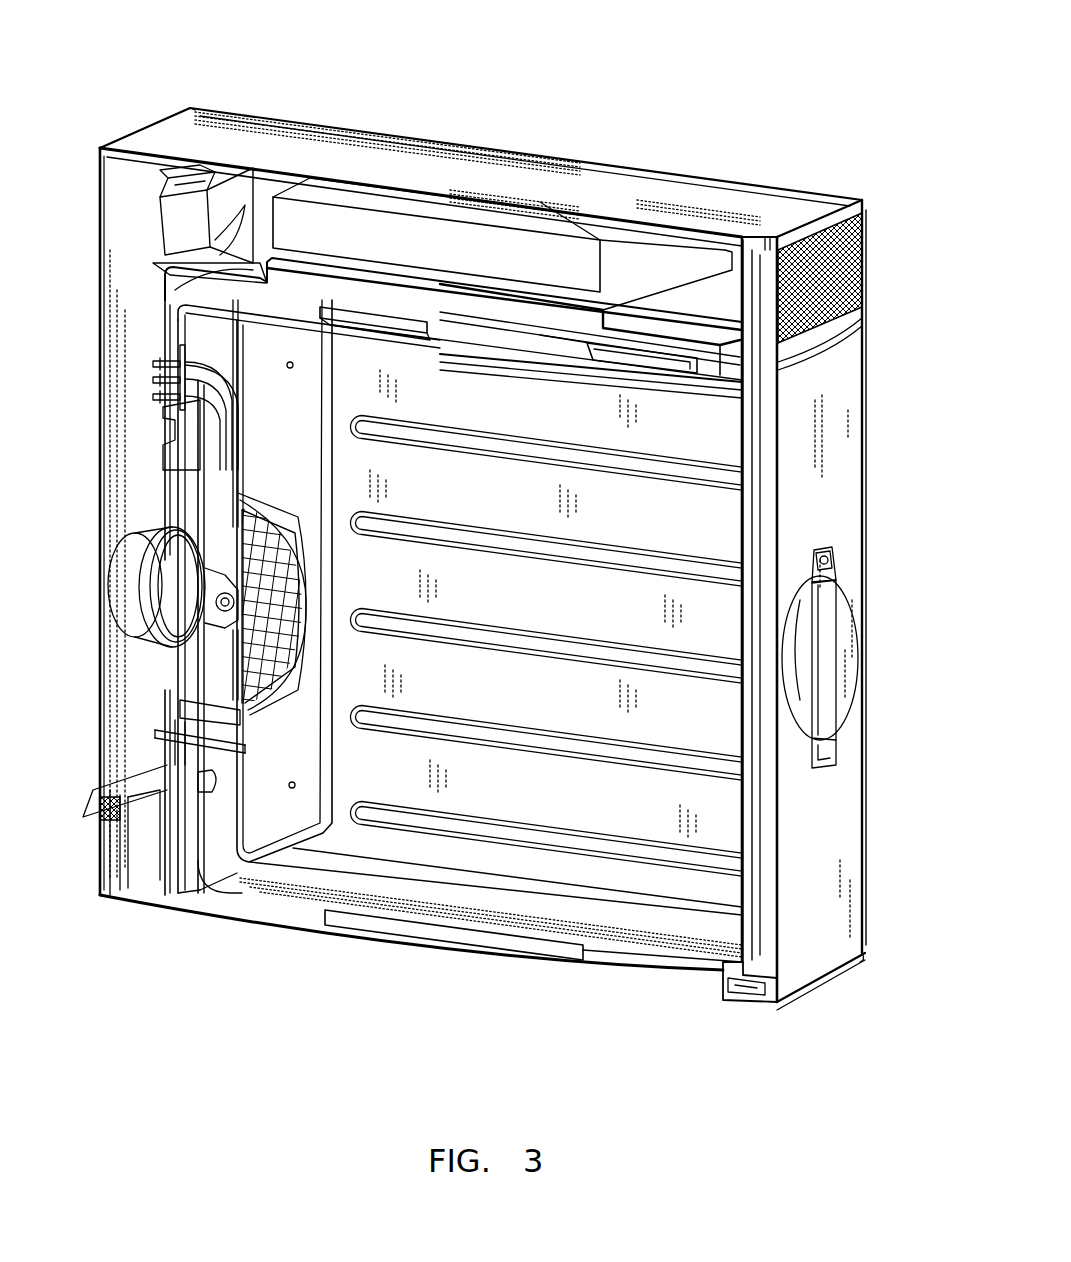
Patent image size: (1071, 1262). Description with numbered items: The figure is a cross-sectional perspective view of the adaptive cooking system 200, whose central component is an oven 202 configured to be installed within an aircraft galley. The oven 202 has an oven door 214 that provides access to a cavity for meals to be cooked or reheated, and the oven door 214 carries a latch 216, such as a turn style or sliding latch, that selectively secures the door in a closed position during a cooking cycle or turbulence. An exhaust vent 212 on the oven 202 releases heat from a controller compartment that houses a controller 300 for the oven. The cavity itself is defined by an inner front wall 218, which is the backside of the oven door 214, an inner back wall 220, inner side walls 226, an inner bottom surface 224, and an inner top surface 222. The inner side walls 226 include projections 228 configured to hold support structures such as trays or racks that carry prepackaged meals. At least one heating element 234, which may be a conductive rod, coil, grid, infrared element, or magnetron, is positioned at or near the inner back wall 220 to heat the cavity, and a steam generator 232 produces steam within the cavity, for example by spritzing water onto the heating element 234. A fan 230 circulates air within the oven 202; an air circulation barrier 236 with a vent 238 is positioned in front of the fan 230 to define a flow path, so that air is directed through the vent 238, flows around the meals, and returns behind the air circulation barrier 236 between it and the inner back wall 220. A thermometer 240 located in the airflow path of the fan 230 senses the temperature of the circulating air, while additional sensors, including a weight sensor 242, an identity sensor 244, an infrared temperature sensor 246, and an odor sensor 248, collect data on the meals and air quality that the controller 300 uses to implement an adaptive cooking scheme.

The adaptive cooking system 200 is at (690, 105).
The oven 202 is at (487, 160).
The exhaust vent 212 is at (865, 243).
The oven door 214 is at (840, 448).
The latch 216 is at (830, 628).
The inner front wall 218 is at (747, 830).
The inner back wall 220 is at (212, 837).
The inner top surface 222 is at (482, 337).
The inner bottom surface 224 is at (347, 887).
The inner side walls 226 is at (528, 787).
The projections 228 is at (528, 830).
The fan 230 is at (213, 535).
The steam generator 232 is at (216, 596).
The heating element 234 is at (220, 706).
The air circulation barrier 236 is at (260, 462).
The vent 238 is at (228, 507).
The thermometer 240 is at (175, 733).
The weight sensor 242 is at (545, 942).
The identity sensor 244 is at (657, 357).
The infrared temperature sensor 246 is at (360, 318).
The odor sensor 248 is at (198, 790).
The controller 300 is at (415, 225).